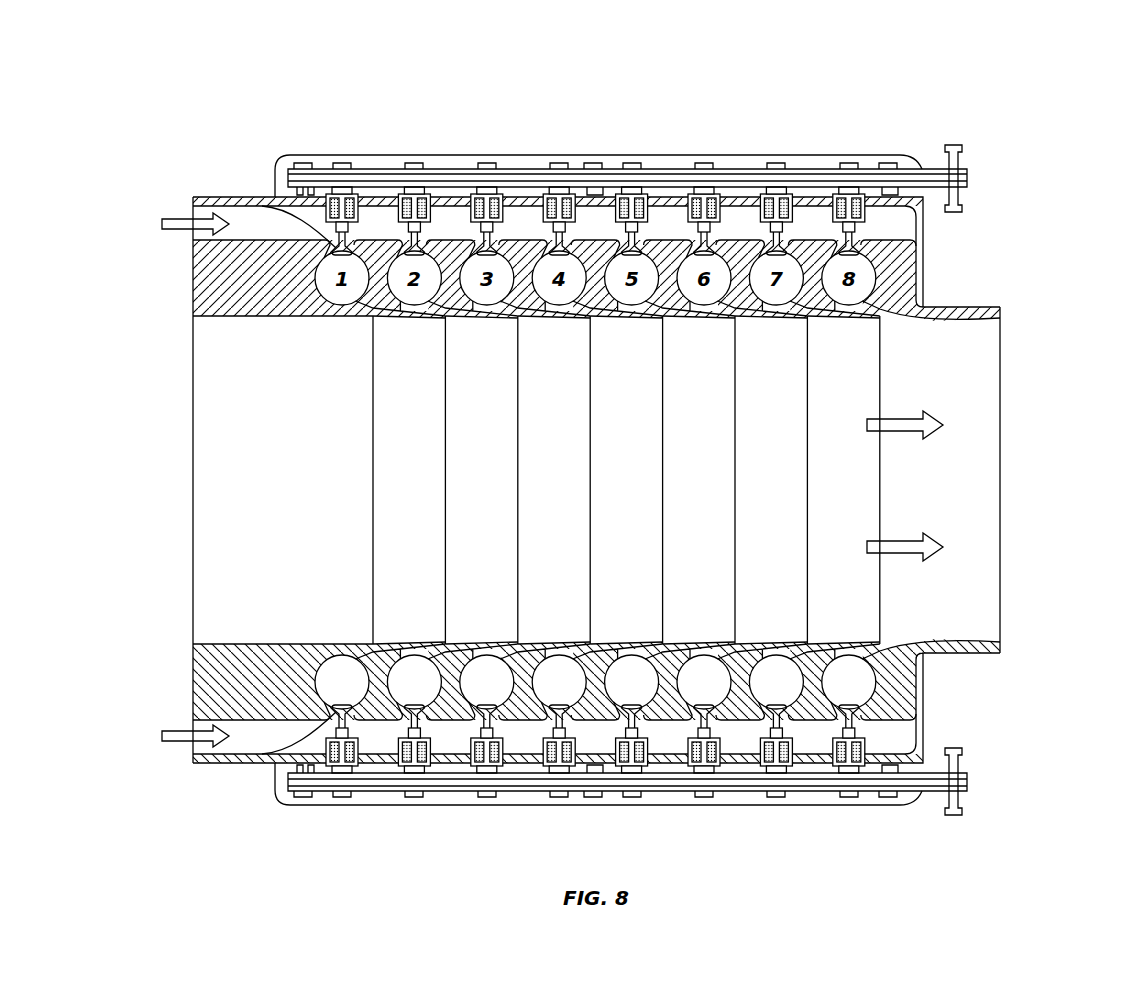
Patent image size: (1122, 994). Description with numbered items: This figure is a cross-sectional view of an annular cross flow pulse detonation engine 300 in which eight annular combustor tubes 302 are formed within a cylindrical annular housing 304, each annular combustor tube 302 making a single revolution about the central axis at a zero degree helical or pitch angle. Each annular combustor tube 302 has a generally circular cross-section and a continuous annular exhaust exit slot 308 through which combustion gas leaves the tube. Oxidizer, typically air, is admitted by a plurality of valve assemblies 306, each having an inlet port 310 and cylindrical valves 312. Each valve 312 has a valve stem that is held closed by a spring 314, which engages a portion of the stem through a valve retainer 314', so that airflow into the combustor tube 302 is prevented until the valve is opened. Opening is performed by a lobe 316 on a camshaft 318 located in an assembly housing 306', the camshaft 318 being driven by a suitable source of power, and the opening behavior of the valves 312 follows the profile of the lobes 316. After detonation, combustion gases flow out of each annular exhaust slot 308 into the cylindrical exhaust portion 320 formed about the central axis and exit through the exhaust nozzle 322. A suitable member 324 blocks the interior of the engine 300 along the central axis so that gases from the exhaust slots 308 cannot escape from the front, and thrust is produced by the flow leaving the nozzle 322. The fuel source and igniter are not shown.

The annular cross flow pulse detonation engine 300 is at (591, 448).
The annular combustor tube 302 is at (330, 289).
The cylindrical annular housing 304 is at (258, 763).
The valve assembly 306 is at (882, 475).
The assembly housing 306' is at (598, 472).
The annular exhaust exit slot 308 is at (382, 315).
The inlet port 310 is at (247, 220).
The cylindrical valve 312 is at (265, 218).
The spring 314 is at (595, 441).
The valve retainer 314' is at (597, 429).
The lobe 316 is at (630, 162).
The camshaft 318 is at (807, 168).
The cylindrical exhaust portion 320 is at (539, 481).
The exhaust nozzle 322 is at (983, 388).
The member 324 is at (193, 422).